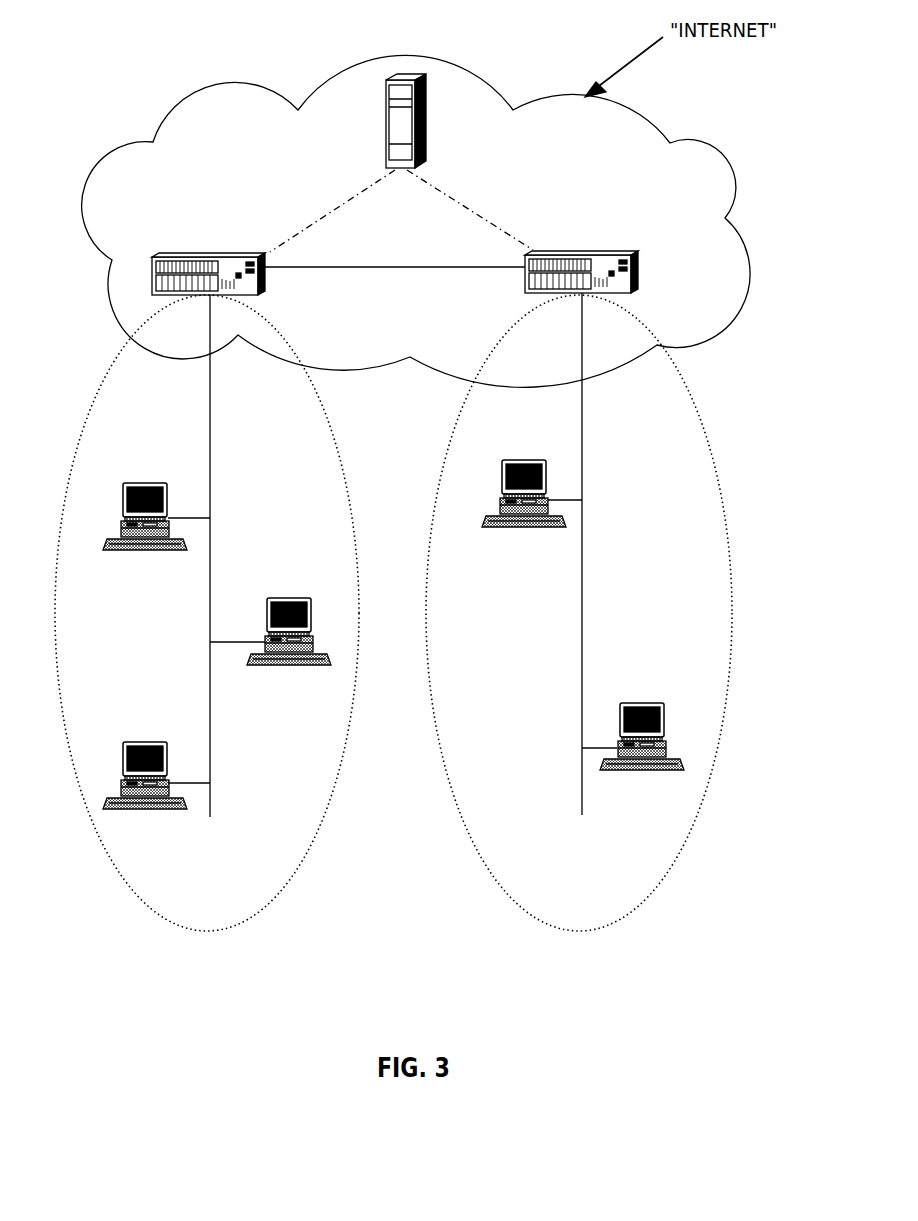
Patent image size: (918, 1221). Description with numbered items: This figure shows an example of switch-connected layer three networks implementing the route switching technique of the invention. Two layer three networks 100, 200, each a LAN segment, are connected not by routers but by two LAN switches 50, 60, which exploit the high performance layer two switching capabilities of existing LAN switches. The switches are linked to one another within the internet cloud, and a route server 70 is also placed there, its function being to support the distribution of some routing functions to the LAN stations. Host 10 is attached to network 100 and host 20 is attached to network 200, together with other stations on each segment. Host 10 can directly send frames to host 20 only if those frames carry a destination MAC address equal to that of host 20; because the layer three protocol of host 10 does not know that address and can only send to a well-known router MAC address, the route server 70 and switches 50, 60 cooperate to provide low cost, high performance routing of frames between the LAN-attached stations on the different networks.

The host 10 is at (123, 760).
The host 20 is at (662, 737).
The LAN switch 50 is at (197, 270).
The LAN switch 60 is at (638, 258).
The route server 70 is at (398, 72).
The layer 3 network 100 is at (138, 890).
The layer 3 network 200 is at (670, 865).